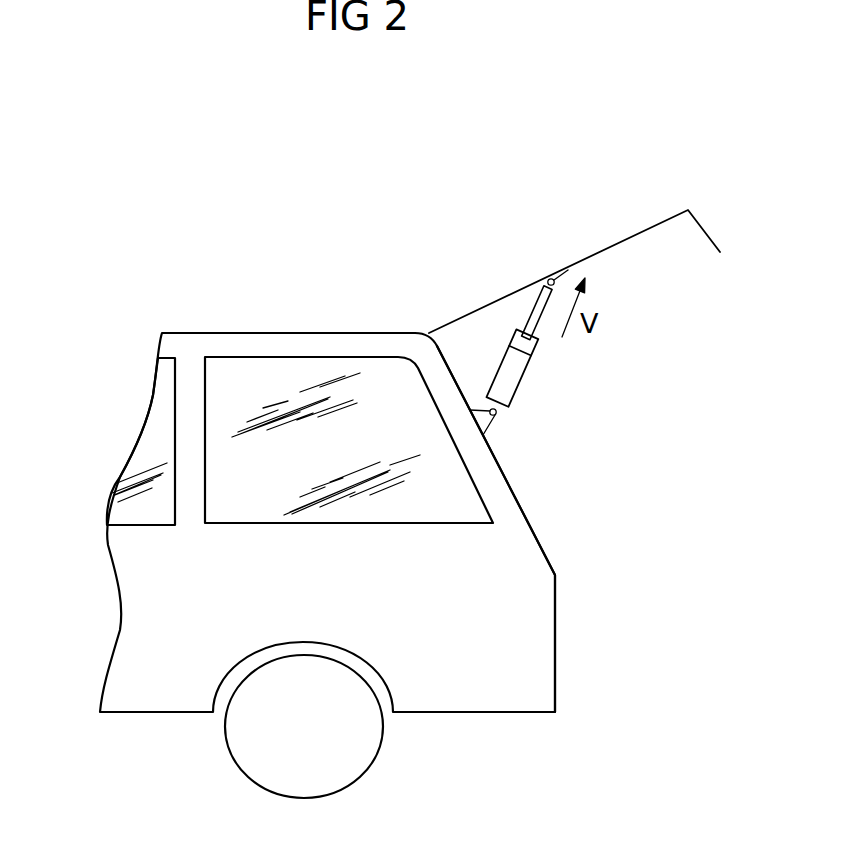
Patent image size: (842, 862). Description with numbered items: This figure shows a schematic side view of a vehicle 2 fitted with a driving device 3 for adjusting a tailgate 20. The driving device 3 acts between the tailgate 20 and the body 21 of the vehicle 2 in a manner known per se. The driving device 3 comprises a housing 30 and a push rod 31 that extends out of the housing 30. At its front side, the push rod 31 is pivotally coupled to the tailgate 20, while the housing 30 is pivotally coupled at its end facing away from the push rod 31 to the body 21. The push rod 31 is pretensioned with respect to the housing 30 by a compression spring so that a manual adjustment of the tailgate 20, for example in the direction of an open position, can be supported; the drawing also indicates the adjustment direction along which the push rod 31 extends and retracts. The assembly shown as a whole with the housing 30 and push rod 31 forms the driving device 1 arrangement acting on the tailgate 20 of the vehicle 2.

The gas spring / strut assembly 1 is at (545, 350).
The vehicle 2 is at (369, 322).
The driving device 3 is at (523, 387).
The tailgate 20 is at (636, 232).
The body 21 is at (513, 575).
The housing 30 is at (523, 372).
The push rod 31 is at (532, 310).